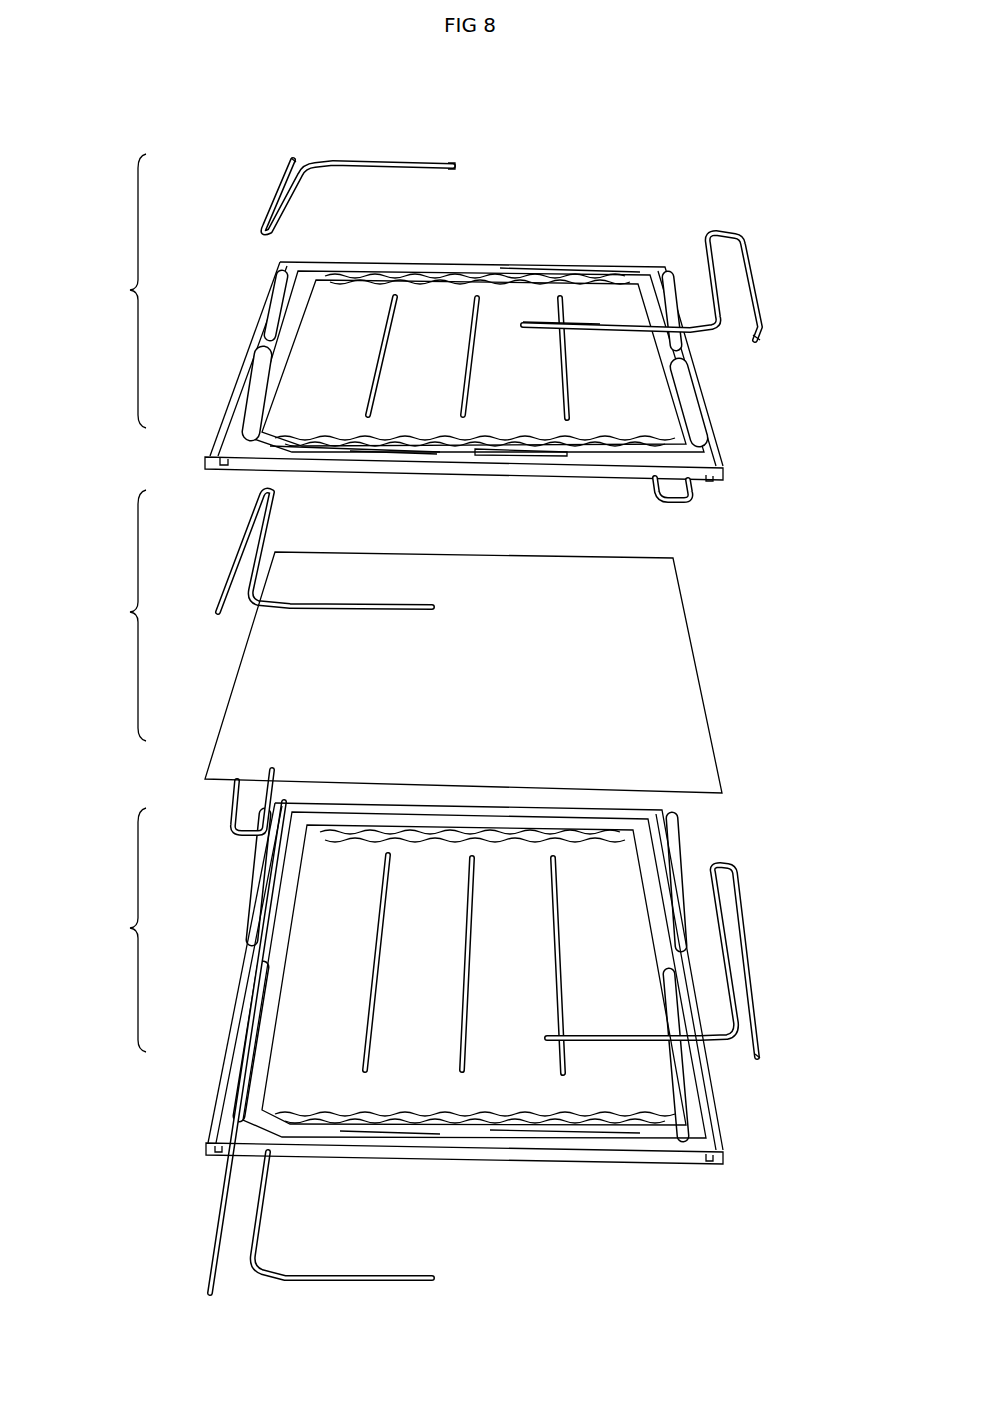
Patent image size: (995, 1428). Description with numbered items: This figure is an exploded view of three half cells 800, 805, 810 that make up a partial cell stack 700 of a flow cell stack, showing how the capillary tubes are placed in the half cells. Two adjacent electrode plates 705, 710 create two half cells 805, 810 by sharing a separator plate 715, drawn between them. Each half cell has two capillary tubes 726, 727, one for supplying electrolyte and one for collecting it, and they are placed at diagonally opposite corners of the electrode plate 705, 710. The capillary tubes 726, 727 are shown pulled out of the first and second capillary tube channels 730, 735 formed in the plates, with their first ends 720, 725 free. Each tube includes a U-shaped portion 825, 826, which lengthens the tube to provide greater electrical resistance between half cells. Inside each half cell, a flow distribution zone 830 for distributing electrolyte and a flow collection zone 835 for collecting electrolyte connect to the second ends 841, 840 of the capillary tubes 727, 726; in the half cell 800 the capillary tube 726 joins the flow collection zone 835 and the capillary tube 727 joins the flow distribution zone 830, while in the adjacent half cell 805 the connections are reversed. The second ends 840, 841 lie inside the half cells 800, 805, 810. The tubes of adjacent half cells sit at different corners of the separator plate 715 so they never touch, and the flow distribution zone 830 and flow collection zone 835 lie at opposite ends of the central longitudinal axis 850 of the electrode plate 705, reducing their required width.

The partial cell stack 700 is at (674, 86).
The electrode plate 705 is at (205, 452).
The electrode plate 710 is at (216, 1112).
The separator plate 715 is at (682, 651).
The first end of capillary tube 720 is at (762, 338).
The first end of capillary tube 725 is at (297, 162).
The capillary tube 726 is at (749, 263).
The capillary tube 727 is at (404, 165).
The first capillary tube channel 730 is at (712, 478).
The second capillary tube channel 735 is at (712, 395).
The half cell 800 is at (130, 290).
The half cell 805 is at (130, 612).
The half cell 810 is at (130, 928).
The U-shaped portion 825 is at (738, 205).
The U-shaped portion 826 is at (268, 156).
The flow distribution zone 830 is at (505, 275).
The flow collection zone 835 is at (433, 443).
The second end of capillary tube 840 is at (525, 333).
The second end of capillary tube 841 is at (455, 165).
The central longitudinal axis 850 is at (463, 400).